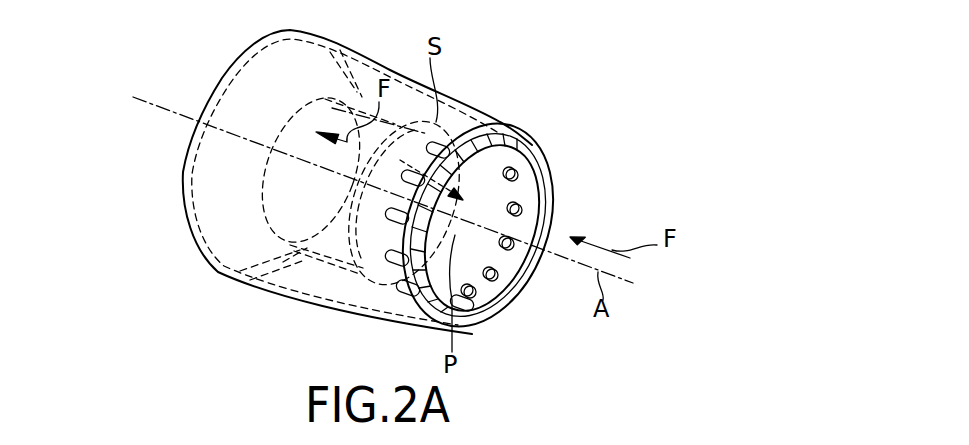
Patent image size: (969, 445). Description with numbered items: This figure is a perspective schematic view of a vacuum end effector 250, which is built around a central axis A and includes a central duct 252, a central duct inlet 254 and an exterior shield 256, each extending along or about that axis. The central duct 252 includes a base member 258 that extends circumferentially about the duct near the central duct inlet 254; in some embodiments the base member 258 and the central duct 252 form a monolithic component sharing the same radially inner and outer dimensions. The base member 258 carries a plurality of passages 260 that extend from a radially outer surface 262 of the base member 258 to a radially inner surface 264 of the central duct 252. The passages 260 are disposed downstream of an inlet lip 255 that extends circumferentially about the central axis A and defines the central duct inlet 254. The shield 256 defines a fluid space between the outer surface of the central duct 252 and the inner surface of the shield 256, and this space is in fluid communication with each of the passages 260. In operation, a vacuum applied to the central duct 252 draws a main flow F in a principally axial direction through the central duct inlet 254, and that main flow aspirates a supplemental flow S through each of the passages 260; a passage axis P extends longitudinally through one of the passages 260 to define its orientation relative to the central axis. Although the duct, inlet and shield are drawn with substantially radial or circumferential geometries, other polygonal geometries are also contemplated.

The vacuum end effector 250 is at (166, 48).
The central duct 252 is at (270, 173).
The central duct inlet 254 is at (580, 196).
The inlet lip 255 is at (527, 280).
The shield 256 is at (218, 272).
The base member 258 is at (379, 288).
The plurality of passages 260 is at (512, 173).
The radially outer surface 262 is at (453, 130).
The radially inner surface 264 is at (490, 200).